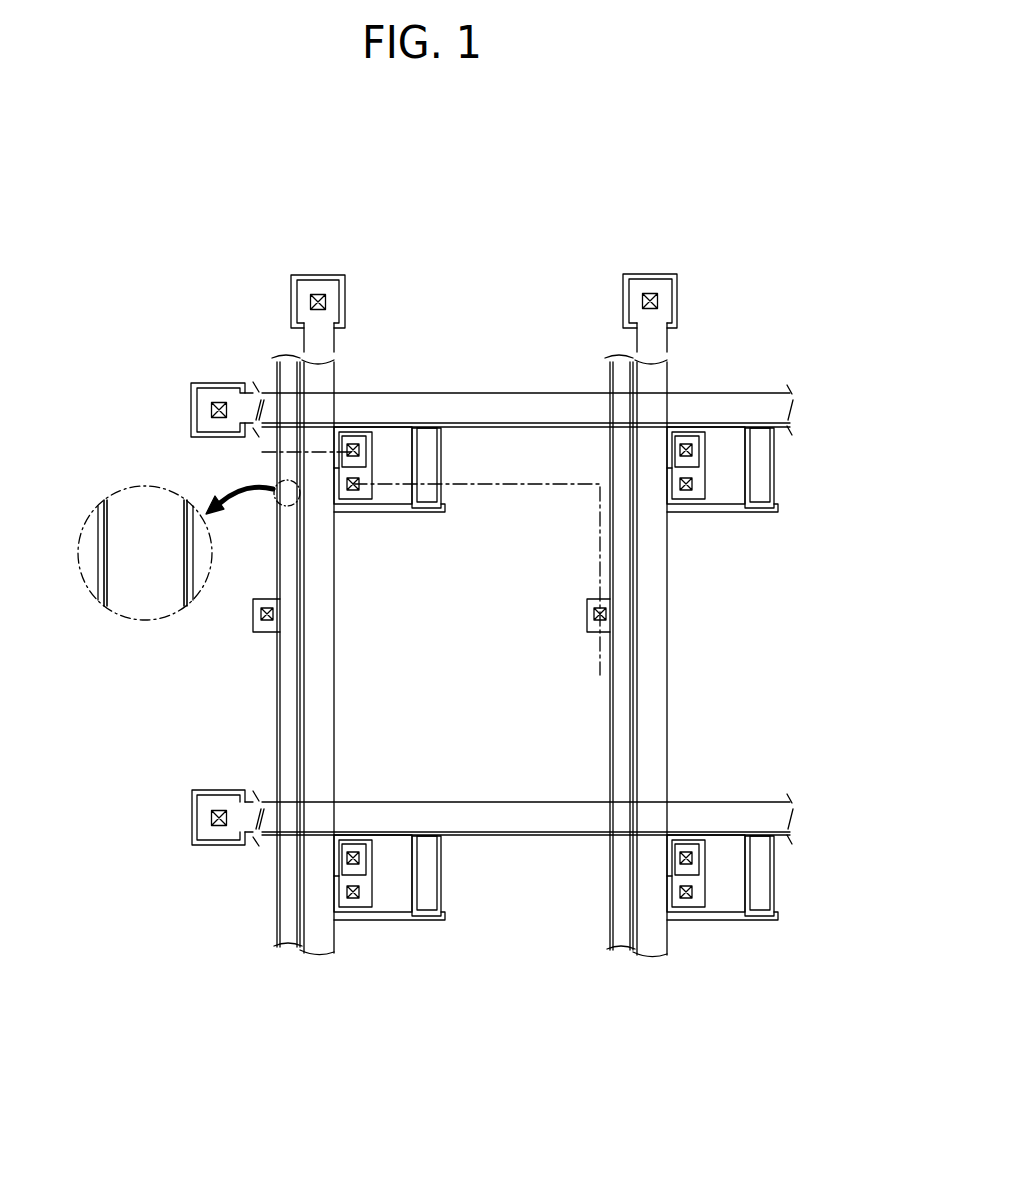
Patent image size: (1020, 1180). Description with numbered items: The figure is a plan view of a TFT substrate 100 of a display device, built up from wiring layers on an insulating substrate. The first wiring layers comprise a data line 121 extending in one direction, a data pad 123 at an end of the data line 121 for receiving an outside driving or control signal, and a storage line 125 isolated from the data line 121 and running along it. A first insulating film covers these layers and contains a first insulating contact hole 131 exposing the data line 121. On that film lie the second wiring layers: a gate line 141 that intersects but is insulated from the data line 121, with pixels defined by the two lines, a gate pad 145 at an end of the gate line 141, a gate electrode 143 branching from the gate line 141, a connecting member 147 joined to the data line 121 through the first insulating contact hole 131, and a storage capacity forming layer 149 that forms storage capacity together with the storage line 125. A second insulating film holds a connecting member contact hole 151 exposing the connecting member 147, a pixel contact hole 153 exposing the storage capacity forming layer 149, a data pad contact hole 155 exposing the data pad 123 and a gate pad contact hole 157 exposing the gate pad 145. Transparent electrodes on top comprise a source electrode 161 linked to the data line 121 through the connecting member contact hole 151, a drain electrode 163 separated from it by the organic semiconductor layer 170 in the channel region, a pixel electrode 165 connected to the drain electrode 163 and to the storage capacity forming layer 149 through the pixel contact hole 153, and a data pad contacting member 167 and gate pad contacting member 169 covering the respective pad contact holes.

The TFT substrate 100 is at (637, 210).
The data line 121 is at (303, 345).
The data pad 123 is at (291, 303).
The storage line 125 is at (106, 505).
The first insulating contact hole 131 is at (353, 444).
The gate line 141 is at (268, 838).
The gate electrode 143 is at (403, 913).
The gate pad 145 is at (220, 845).
The connecting member 147 is at (358, 913).
The storage capacity forming layer 149 is at (99, 525).
The connecting member contact hole 151 is at (353, 491).
The pixel contact hole 153 is at (606, 614).
The data pad contact hole 155 is at (326, 302).
The gate pad contact hole 157 is at (209, 410).
The source electrode 161 is at (423, 509).
The drain electrode 163 is at (441, 463).
The pixel electrode 165 is at (334, 687).
The data pad contacting member 167 is at (318, 275).
The gate pad contacting member 169 is at (191, 819).
The organic semiconductor layer 170 is at (420, 430).